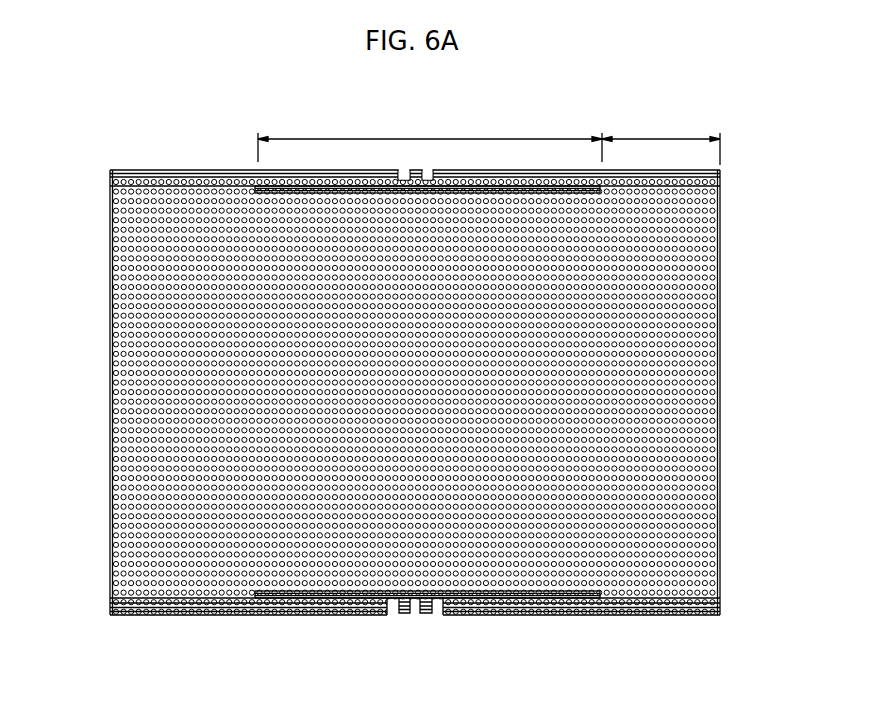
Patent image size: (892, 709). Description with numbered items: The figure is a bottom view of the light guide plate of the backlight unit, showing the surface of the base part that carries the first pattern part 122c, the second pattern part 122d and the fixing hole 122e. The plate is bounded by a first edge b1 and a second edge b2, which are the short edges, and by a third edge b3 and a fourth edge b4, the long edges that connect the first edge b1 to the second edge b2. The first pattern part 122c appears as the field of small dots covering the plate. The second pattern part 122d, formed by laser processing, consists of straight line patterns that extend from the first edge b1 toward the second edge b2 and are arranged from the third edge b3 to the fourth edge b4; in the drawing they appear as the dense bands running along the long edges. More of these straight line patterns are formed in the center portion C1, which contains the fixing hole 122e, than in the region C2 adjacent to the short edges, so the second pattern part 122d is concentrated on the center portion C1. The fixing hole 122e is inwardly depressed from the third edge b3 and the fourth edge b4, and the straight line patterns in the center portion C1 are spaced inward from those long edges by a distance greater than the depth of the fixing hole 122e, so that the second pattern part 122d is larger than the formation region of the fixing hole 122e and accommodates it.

The first pattern part 122c is at (714, 237).
The second pattern part 122d is at (158, 181).
The fixing hole 122e is at (442, 617).
The first edge b1 is at (110, 180).
The second edge b2 is at (720, 180).
The third edge b3 is at (127, 170).
The fourth edge b4 is at (120, 617).
The center portion C1 is at (430, 137).
The region adjacent to the first and second edges C2 is at (661, 138).